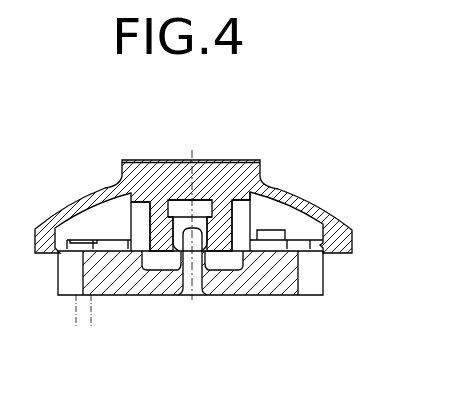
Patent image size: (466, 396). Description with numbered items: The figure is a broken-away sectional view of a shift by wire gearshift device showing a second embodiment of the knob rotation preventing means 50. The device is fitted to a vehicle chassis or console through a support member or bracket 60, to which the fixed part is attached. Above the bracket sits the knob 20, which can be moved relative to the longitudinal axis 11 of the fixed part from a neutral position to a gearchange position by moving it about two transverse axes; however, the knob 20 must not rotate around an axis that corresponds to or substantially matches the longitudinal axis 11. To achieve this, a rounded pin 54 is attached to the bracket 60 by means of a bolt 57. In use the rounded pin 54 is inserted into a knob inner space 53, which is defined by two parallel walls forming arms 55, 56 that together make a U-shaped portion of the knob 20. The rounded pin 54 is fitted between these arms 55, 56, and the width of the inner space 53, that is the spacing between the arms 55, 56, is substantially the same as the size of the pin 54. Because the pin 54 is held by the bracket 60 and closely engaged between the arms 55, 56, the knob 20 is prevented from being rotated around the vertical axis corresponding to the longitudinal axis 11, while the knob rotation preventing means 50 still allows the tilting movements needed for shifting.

The longitudinal axis 11 is at (190, 159).
The knob 20 is at (272, 172).
The knob rotation preventing means 50 is at (120, 229).
The knob inner space 53 is at (201, 199).
The rounded pin 54 is at (286, 231).
The arm 55 is at (148, 198).
The arm 56 is at (236, 197).
The bolt 57 is at (190, 297).
The bracket 60 is at (337, 285).